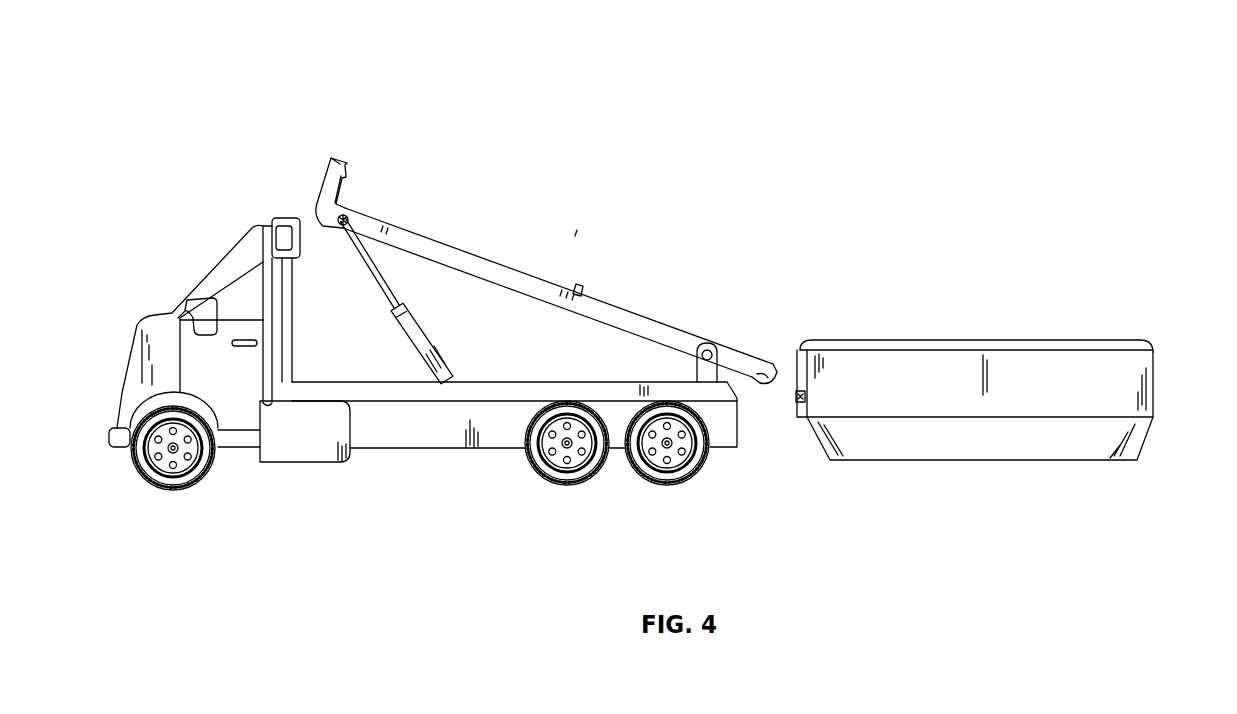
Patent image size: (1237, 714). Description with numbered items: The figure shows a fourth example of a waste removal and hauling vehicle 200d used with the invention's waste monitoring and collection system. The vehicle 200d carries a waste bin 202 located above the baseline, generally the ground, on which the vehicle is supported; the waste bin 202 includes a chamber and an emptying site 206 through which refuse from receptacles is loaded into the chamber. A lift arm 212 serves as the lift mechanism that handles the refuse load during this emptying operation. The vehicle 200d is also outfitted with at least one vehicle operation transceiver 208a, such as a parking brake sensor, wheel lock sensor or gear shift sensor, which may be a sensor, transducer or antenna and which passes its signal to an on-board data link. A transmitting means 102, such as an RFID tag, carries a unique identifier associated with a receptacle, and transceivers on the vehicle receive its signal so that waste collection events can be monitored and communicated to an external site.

The waste removal and hauling vehicle 200d is at (208, 57).
The vehicle operation transceiver 208a is at (696, 459).
The lift arm 212 is at (598, 290).
The waste bin 202 is at (1157, 380).
The emptying site 206 is at (1014, 336).
The transmitting means 102 is at (803, 405).